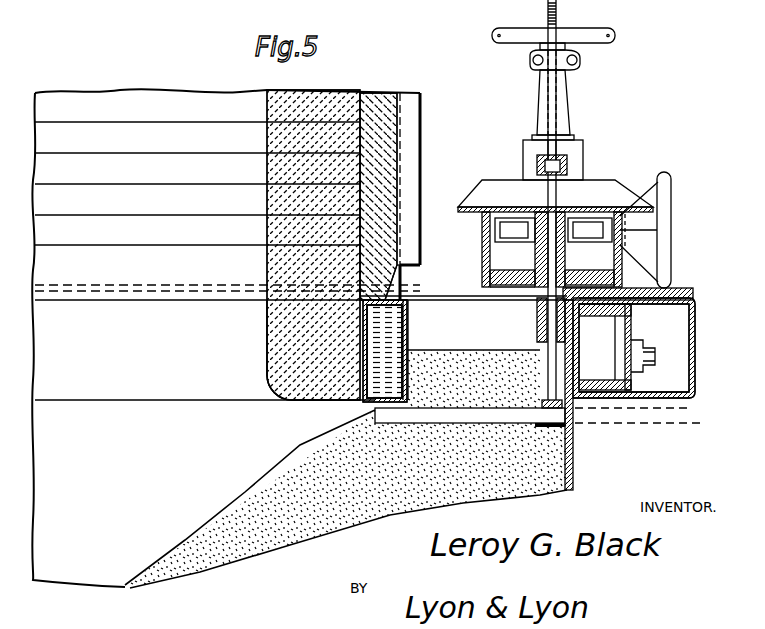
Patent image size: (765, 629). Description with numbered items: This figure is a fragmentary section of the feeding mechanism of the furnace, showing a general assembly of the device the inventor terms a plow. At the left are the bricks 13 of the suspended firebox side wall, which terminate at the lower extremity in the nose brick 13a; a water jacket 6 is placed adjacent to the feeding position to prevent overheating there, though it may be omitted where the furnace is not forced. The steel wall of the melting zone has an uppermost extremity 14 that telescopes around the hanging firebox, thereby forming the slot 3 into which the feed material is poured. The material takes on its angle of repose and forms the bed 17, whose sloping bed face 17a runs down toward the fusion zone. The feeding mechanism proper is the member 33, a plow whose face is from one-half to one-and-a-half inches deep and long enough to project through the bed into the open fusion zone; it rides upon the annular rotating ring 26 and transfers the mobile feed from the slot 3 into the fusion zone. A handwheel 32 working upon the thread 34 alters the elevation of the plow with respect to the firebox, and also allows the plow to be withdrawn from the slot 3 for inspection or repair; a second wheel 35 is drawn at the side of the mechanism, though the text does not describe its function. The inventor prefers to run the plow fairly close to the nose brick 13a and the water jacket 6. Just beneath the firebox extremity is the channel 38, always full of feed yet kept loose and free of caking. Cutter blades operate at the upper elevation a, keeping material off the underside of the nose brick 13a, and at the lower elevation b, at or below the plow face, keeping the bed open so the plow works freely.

The bricks 13 is at (272, 232).
The nose brick 13a is at (271, 350).
The water jacket 6 is at (405, 326).
The slot 3 is at (462, 316).
The uppermost extremity 14 is at (560, 312).
The annular rotating ring 26 is at (668, 298).
The hand wheel 35 is at (664, 205).
The handwheel 32 is at (616, 36).
The thread 34 is at (560, 20).
The member 33 is at (375, 410).
The bed 17 is at (312, 525).
The bed face 17a is at (244, 490).
The channel 38 is at (636, 378).
The elevation a is at (641, 409).
The elevation b is at (683, 420).